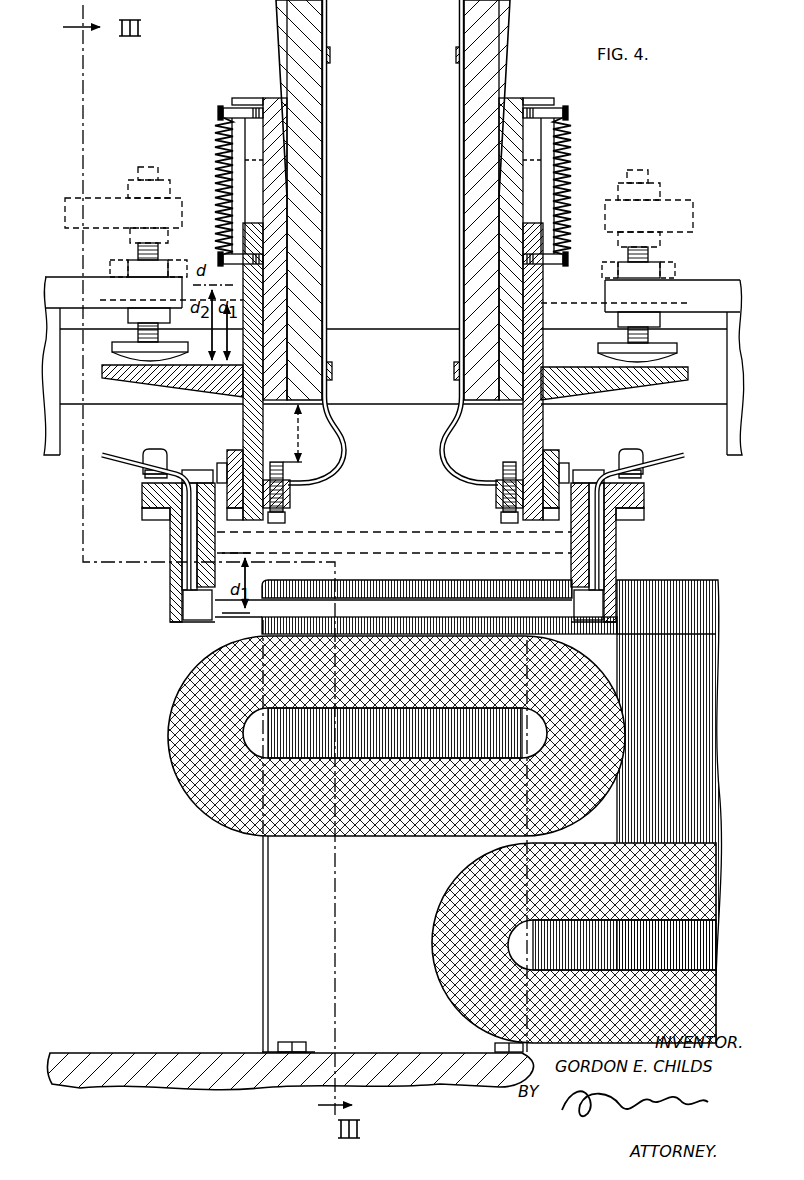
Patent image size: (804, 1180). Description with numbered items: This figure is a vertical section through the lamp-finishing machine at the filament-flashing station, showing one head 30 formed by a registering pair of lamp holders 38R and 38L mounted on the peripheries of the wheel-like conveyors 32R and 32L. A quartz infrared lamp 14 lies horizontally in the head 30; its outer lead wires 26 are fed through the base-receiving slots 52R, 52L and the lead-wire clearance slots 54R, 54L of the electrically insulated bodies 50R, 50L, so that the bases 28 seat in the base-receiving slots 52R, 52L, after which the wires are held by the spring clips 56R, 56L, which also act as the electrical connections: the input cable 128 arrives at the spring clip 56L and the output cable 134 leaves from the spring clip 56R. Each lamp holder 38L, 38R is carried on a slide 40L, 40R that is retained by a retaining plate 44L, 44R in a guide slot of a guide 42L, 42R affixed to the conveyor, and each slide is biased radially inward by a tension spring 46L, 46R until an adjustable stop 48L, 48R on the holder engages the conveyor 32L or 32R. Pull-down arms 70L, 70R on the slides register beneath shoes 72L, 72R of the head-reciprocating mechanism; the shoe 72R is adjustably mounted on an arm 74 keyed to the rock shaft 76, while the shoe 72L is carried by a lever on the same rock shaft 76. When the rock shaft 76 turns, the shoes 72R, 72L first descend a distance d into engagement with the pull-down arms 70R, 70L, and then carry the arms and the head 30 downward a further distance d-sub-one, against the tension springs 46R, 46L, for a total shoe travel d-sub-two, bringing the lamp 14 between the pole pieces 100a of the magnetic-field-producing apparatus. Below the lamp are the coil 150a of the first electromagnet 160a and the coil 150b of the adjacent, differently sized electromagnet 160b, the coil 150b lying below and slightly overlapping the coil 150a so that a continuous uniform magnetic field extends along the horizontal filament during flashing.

The quartz infrared lamp 14 is at (228, 607).
The outer lead wire 26 is at (120, 460).
The base 28 is at (183, 604).
The head 30 is at (304, 496).
The wheel-like conveyor 32L is at (280, 38).
The wheel-like conveyor 32R is at (500, 45).
The lamp holder 38L is at (168, 540).
The lamp holder 38R is at (622, 537).
The slide 40L is at (266, 213).
The slide 40R is at (520, 213).
The guide 42L is at (280, 303).
The guide 42R is at (506, 303).
The retaining plate 44L is at (242, 100).
The retaining plate 44R is at (554, 102).
The tension spring 46L is at (214, 152).
The tension spring 46R is at (570, 158).
The adjustable stop 48L is at (277, 462).
The adjustable stop 48R is at (510, 462).
The electrically insulated body 50L is at (180, 578).
The electrically insulated body 50R is at (616, 556).
The base-receiving slot 52L is at (190, 623).
The base-receiving slot 52R is at (600, 625).
The lead-wire clearance slot 54L is at (194, 470).
The lead-wire clearance slot 54R is at (594, 470).
The spring clip 56L is at (156, 452).
The spring clip 56R is at (635, 458).
The pull-down arm 70L is at (140, 378).
The pull-down arm 70R is at (660, 378).
The shoe 72L is at (122, 264).
The shoe 72R is at (672, 264).
The arm 74 is at (110, 198).
The rock shaft 76 is at (378, 405).
The pole piece 100a is at (430, 597).
The input cable 128 is at (340, 420).
The output cable 134 is at (452, 420).
The coil 150a is at (170, 728).
The coil 150b is at (450, 976).
The first electromagnet 160a is at (378, 576).
The electromagnet 160b is at (698, 578).